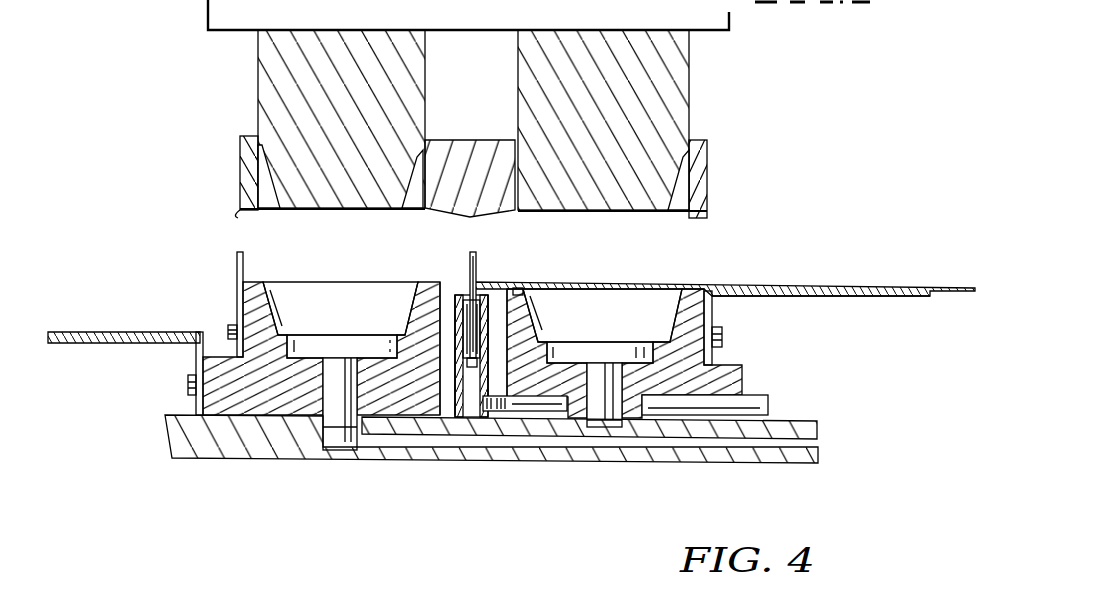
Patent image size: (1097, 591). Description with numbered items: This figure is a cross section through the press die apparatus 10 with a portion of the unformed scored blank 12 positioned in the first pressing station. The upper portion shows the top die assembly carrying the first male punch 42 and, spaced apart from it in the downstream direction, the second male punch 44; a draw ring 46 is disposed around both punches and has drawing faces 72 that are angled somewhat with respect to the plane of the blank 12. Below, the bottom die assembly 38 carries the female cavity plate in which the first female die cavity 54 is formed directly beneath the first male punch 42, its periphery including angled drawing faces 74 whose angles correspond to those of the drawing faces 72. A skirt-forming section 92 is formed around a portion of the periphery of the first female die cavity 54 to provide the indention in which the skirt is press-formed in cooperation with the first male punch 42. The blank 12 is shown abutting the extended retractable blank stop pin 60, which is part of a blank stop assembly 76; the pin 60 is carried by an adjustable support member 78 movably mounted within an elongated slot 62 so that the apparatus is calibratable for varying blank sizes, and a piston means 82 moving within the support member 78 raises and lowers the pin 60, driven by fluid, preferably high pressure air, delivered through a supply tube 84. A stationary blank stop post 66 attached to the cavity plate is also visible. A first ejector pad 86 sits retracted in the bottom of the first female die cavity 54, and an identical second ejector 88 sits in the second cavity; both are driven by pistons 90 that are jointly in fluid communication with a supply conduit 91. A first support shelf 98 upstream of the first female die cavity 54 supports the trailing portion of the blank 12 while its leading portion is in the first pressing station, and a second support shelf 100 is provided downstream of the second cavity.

The press die apparatus 10 is at (149, 160).
The unformed scored blank 12 is at (800, 284).
The bottom die assembly 38 is at (256, 467).
The first male punch 42 is at (653, 200).
The second male punch 44 is at (342, 200).
The draw ring 46 is at (437, 212).
The first female die cavity 54 is at (660, 310).
The retractable blank stop pin 60 is at (471, 252).
The elongated slot 62 is at (455, 295).
The stationary blank stop post 66 is at (236, 256).
The drawing faces 72 is at (252, 211).
The angled drawing faces 74 is at (250, 282).
The blank stop assembly 76 is at (445, 405).
The adjustable support member 78 is at (455, 335).
The piston means 82 is at (481, 322).
The supply tube 84 is at (541, 409).
The first ejector pad 86 is at (620, 352).
The second ejector 88 is at (318, 335).
The pistons 90 is at (340, 451).
The supply conduit 91 is at (702, 444).
The skirt-forming section 92 is at (520, 287).
The first support shelf 98 is at (832, 297).
The second support shelf 100 is at (136, 331).